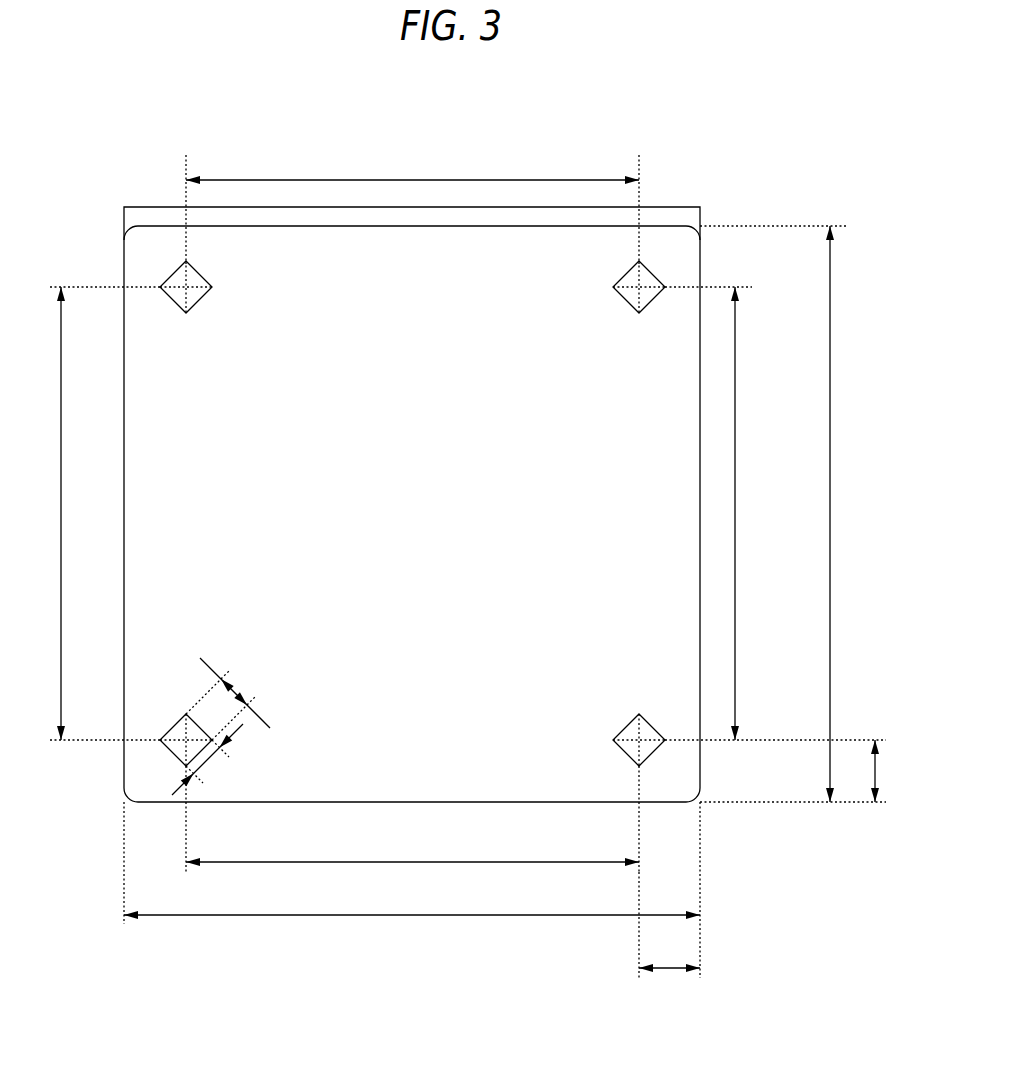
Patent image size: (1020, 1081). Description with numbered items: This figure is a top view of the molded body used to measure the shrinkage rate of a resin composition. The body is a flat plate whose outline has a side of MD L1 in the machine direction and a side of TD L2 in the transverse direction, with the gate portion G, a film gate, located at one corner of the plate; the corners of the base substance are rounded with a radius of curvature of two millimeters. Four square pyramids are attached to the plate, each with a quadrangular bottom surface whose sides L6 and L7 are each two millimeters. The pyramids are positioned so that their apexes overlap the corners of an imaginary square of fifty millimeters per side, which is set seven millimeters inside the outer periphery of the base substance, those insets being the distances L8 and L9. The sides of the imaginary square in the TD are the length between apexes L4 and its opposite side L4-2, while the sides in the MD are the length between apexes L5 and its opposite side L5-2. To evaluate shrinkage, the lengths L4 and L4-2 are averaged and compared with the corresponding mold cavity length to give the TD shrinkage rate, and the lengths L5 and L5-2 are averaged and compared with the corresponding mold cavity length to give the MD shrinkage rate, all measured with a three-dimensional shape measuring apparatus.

The gate portion G is at (696, 186).
The side of MD L1 is at (793, 514).
The side of TD L2 is at (412, 890).
The length between apexes of two square pyramids spaced apart in TD L4 is at (412, 819).
The opposite side of L4 L4-2 is at (412, 207).
The length between apexes of two square pyramids spaced apart in MD L5 is at (91, 513).
The opposite side of L5 L5-2 is at (775, 513).
The side of bottom surface of square pyramid L6 is at (228, 699).
The side of bottom surface of square pyramid L7 is at (207, 760).
The distance of base substance from outer periphery L8 is at (669, 925).
The distance of base substance from outer periphery L9 is at (896, 771).